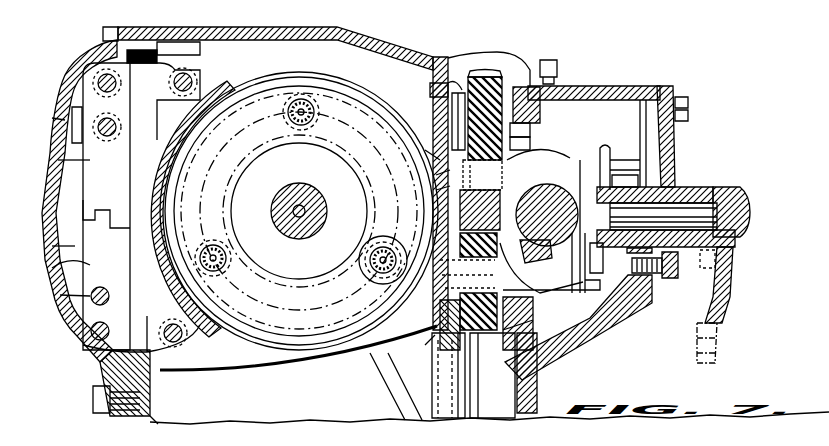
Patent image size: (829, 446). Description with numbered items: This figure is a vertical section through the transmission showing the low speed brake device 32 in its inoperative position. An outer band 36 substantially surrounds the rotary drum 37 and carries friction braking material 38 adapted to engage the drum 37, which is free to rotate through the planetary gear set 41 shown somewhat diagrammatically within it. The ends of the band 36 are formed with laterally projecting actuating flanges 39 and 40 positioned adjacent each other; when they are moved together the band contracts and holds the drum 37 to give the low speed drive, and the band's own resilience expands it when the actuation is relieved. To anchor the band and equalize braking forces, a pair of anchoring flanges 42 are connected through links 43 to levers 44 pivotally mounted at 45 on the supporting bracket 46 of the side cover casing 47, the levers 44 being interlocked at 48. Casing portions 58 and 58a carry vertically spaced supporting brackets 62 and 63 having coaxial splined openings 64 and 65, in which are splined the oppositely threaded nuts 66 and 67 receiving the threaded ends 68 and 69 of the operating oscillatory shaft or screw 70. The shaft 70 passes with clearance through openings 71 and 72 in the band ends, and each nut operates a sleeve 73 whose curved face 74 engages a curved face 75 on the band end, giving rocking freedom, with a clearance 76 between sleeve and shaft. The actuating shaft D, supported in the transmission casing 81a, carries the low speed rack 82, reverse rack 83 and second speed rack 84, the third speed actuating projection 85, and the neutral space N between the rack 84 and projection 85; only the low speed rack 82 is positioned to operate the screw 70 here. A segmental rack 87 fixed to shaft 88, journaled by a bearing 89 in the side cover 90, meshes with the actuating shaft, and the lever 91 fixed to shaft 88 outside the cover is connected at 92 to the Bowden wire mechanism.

The brake device 32 is at (285, 368).
The outer band 36 is at (270, 28).
The drum 37 is at (265, 350).
The friction braking material 38 is at (330, 360).
The actuating flange 39 is at (436, 175).
The actuating flange 40 is at (440, 245).
The planetary gear set 41 is at (330, 135).
The anchoring flange 42 is at (213, 45).
The link 43 is at (140, 70).
The lever 44 is at (58, 160).
The pivot 45 is at (60, 295).
The supporting bracket 46 is at (52, 118).
The transmission side cover casing 47 is at (52, 246).
The lever interlock 48 is at (83, 215).
The transmission casing portion 58 is at (600, 88).
The transmission casing portion 58a is at (545, 365).
The supporting bracket 62 is at (545, 105).
The supporting bracket 63 is at (530, 325).
The splined opening 64 is at (535, 130).
The splined opening 65 is at (528, 308).
The nut 66 is at (535, 148).
The nut 67 is at (482, 345).
The threaded end 68 is at (480, 75).
The threaded end 69 is at (440, 350).
The operating oscillatory shaft 70 is at (500, 186).
The opening 71 is at (436, 190).
The opening 72 is at (375, 300).
The sleeve 73 is at (425, 150).
The curved face 74 is at (547, 199).
The curved face 75 is at (537, 162).
The clearance 76 is at (462, 140).
The transmission casing 81a is at (340, 36).
The low speed rack 82 is at (527, 254).
The reverse rack 83 is at (625, 159).
The second speed rack 84 is at (555, 278).
The third speed actuating projection 85 is at (628, 290).
The segmental rack 87 is at (605, 145).
The shaft 88 is at (670, 195).
The bearing 89 is at (715, 187).
The transmission side cover 90 is at (680, 130).
The lever 91 is at (730, 288).
The lever connection 92 is at (715, 345).
The neutral space N is at (566, 226).